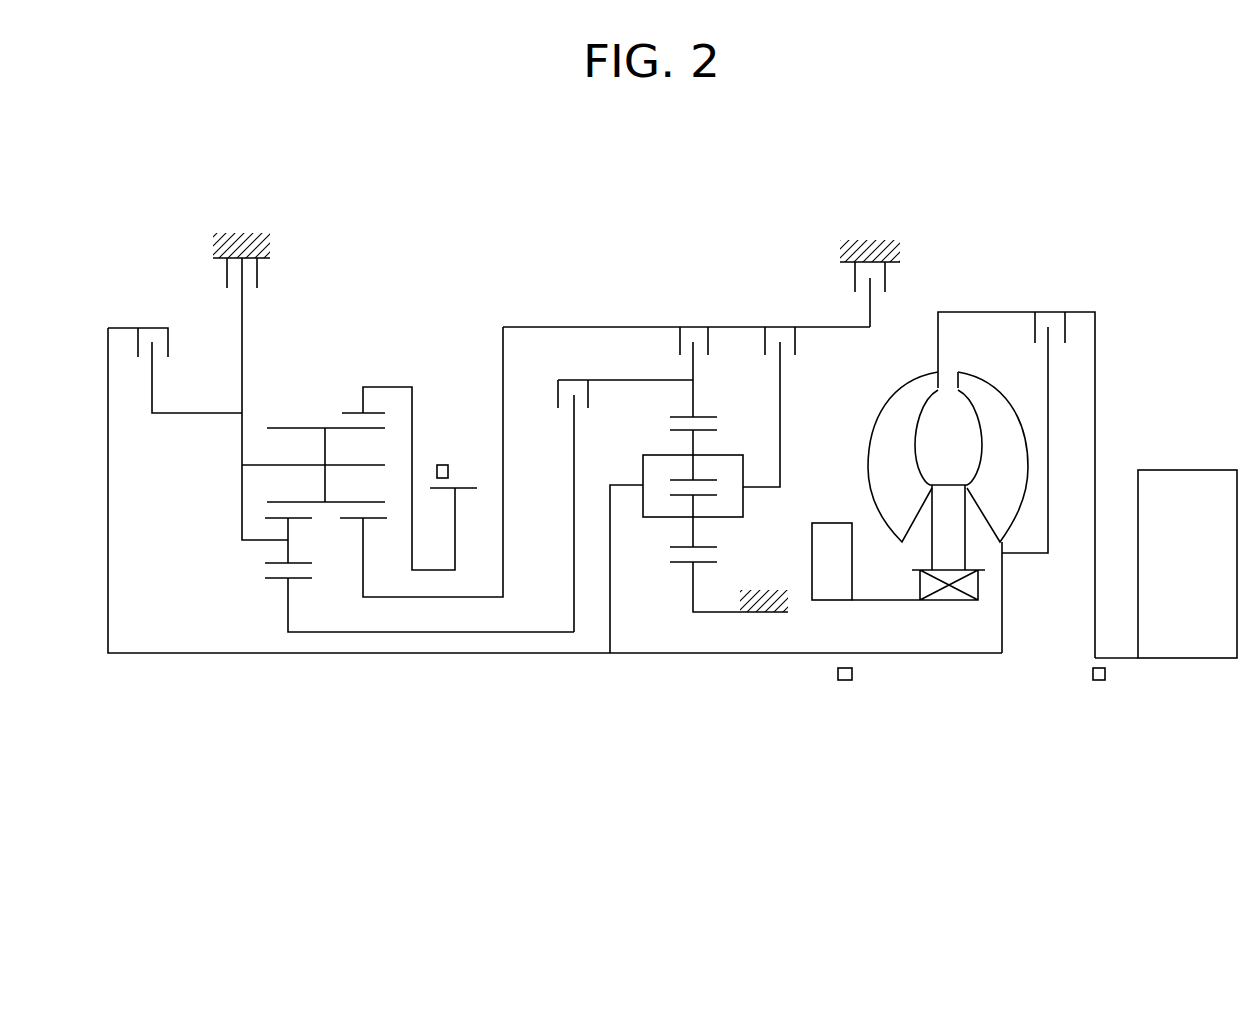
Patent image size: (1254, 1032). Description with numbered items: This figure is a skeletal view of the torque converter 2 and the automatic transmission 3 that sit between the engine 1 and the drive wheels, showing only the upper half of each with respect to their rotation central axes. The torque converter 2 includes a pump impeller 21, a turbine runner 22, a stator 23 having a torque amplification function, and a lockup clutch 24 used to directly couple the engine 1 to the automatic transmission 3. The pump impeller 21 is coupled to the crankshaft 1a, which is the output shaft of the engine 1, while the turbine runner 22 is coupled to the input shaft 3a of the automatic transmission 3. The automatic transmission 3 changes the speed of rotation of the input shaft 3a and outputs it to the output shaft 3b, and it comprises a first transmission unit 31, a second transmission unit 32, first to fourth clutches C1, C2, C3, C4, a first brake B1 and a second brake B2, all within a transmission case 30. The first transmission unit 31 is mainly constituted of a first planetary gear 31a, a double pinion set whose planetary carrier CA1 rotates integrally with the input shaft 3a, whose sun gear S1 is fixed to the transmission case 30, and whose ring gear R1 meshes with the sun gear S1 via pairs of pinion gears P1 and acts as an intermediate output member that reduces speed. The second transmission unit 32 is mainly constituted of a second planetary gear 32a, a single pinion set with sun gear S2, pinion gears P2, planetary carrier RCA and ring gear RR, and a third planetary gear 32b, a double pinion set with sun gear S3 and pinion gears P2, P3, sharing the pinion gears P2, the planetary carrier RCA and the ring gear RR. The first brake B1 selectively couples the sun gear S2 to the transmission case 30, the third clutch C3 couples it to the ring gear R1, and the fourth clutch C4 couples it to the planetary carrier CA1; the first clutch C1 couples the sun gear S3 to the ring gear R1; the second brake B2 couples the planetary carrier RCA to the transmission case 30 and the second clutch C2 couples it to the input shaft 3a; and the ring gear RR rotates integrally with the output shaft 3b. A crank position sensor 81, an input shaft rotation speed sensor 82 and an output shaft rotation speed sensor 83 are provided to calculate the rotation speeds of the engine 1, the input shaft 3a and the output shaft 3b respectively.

The engine 1 is at (1178, 470).
The crankshaft 1a is at (1120, 660).
The torque converter 2 is at (999, 306).
The pump impeller 21 is at (895, 388).
The turbine runner 22 is at (1000, 388).
The stator 23 is at (948, 478).
The lockup clutch 24 is at (1064, 306).
The automatic transmission 3 is at (674, 248).
The input shaft 3a is at (727, 654).
The output shaft 3b is at (468, 488).
The transmission case 30 is at (262, 268).
The first transmission unit 31 is at (735, 301).
The first planetary gear 31a is at (649, 606).
The second transmission unit 32 is at (446, 297).
The second planetary gear 32a is at (367, 621).
The third planetary gear 32b is at (270, 621).
The crank position sensor 81 is at (1093, 675).
The input shaft rotation speed sensor 82 is at (845, 680).
The output shaft rotation speed sensor 83 is at (442, 465).
The first brake B1 is at (855, 280).
The second brake B2 is at (226, 268).
The first clutch C1 is at (556, 400).
The second clutch C2 is at (138, 350).
The third clutch C3 is at (679, 345).
The fourth clutch C4 is at (797, 340).
The sun gear S1 is at (688, 565).
The pinion gears P1 is at (718, 423).
The ring gear R1 is at (670, 422).
The planetary carrier CA1 is at (745, 503).
The sun gear S2 is at (378, 510).
The pinion gears P2 is at (335, 510).
The sun gear S3 is at (268, 578).
The pinion gears P3 is at (268, 517).
The ring gear RR is at (345, 413).
The planetary carrier RCA is at (242, 490).